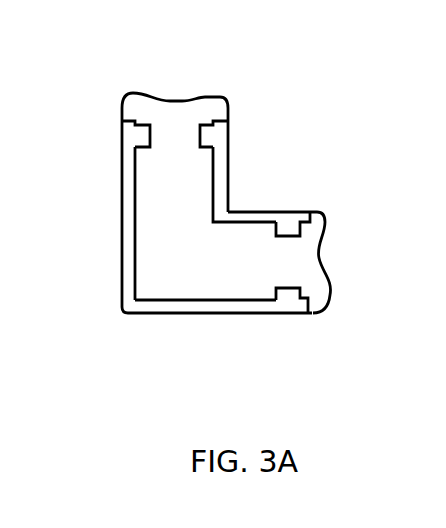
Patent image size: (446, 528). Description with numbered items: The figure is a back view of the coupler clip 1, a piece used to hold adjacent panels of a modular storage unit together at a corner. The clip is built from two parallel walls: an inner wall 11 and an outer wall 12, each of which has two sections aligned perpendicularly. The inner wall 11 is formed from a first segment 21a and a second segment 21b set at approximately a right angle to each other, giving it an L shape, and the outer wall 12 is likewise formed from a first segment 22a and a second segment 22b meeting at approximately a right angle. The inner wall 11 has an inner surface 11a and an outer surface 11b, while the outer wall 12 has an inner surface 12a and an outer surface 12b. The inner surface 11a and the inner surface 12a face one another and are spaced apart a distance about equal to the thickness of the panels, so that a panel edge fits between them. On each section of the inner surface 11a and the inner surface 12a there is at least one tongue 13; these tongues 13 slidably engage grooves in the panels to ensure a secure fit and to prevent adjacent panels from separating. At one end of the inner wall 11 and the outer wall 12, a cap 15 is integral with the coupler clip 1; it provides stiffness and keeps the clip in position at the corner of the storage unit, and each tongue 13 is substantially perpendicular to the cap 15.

The coupler clip 1 is at (114, 341).
The inner wall 11 is at (229, 157).
The inner surface of inner wall 11a is at (218, 151).
The outer surface of inner wall 11b is at (290, 213).
The outer wall 12 is at (121, 190).
The inner surface of outer wall 12a is at (170, 290).
The outer surface of outer wall 12b is at (121, 255).
The tongue 13 is at (150, 143).
The cap 15 is at (202, 280).
The first segment of inner wall 21a is at (212, 200).
The second segment of inner wall 21b is at (259, 237).
The first segment of outer wall 22a is at (141, 176).
The second segment of outer wall 22b is at (241, 290).